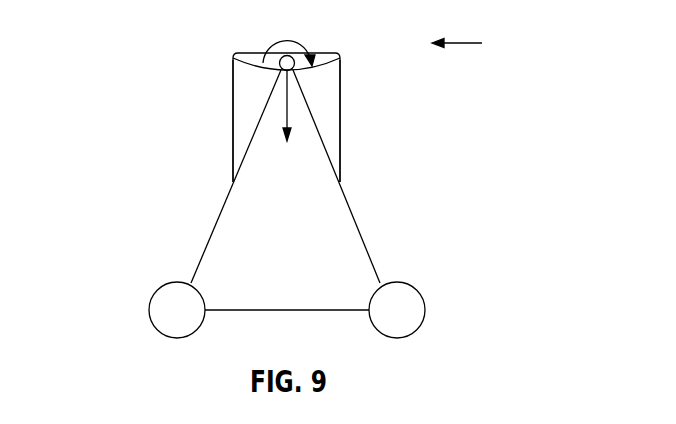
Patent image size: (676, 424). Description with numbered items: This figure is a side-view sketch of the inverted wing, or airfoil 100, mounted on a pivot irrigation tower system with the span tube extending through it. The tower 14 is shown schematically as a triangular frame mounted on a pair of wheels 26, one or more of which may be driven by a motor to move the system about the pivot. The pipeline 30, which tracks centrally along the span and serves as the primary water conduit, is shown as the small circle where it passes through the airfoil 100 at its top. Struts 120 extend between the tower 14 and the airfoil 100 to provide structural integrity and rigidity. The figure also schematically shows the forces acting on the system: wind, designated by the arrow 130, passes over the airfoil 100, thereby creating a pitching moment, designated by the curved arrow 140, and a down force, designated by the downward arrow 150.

The tower 14 is at (356, 217).
The wheels 26 is at (162, 302).
The pipeline 30 is at (281, 69).
The airfoil 100 is at (233, 60).
The struts 120 is at (233, 153).
The arrow designating wind 130 is at (458, 43).
The arrow designating pitching moment 140 is at (288, 40).
The arrow designating down force 150 is at (288, 112).